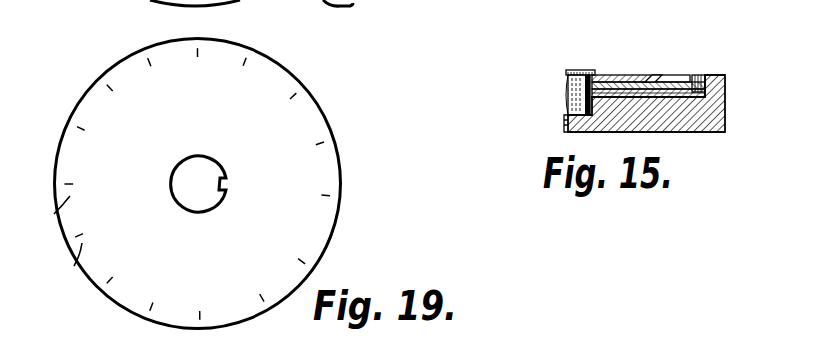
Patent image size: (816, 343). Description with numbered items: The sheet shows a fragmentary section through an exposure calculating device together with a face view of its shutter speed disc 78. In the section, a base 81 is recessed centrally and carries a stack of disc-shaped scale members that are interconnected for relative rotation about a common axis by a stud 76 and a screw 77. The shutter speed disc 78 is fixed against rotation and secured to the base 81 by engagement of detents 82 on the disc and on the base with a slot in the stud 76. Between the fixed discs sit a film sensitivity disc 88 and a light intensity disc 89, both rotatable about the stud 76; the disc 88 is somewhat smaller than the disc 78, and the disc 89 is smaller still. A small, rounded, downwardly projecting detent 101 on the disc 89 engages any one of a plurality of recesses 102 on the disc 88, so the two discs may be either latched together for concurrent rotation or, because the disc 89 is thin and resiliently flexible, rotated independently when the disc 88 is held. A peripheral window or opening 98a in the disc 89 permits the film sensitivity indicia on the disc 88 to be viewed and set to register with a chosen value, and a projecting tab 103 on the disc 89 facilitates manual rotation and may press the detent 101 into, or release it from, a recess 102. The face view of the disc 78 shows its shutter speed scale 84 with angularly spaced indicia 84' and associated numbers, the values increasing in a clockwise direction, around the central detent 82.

In FIG. 19, the shutter speed disc 78 is at (270, 88).
In FIG. 19, the detents 82 is at (214, 184).
In FIG. 19, the shutter speed scale 84 is at (41, 218).
In FIG. 19, the indicia 84' is at (62, 269).
In FIG. 15, the base 81 is at (720, 119).
In FIG. 15, the stud 76 is at (583, 70).
In FIG. 15, the screw 77 is at (566, 121).
In FIG. 15, the film sensitivity disc 88 is at (612, 93).
In FIG. 15, the light intensity disc 89 is at (607, 82).
In FIG. 15, the detent 101 is at (646, 89).
In FIG. 15, the recesses 102 is at (657, 93).
In FIG. 15, the opening 98a is at (664, 82).
In FIG. 15, the projecting tab 103 is at (676, 78).